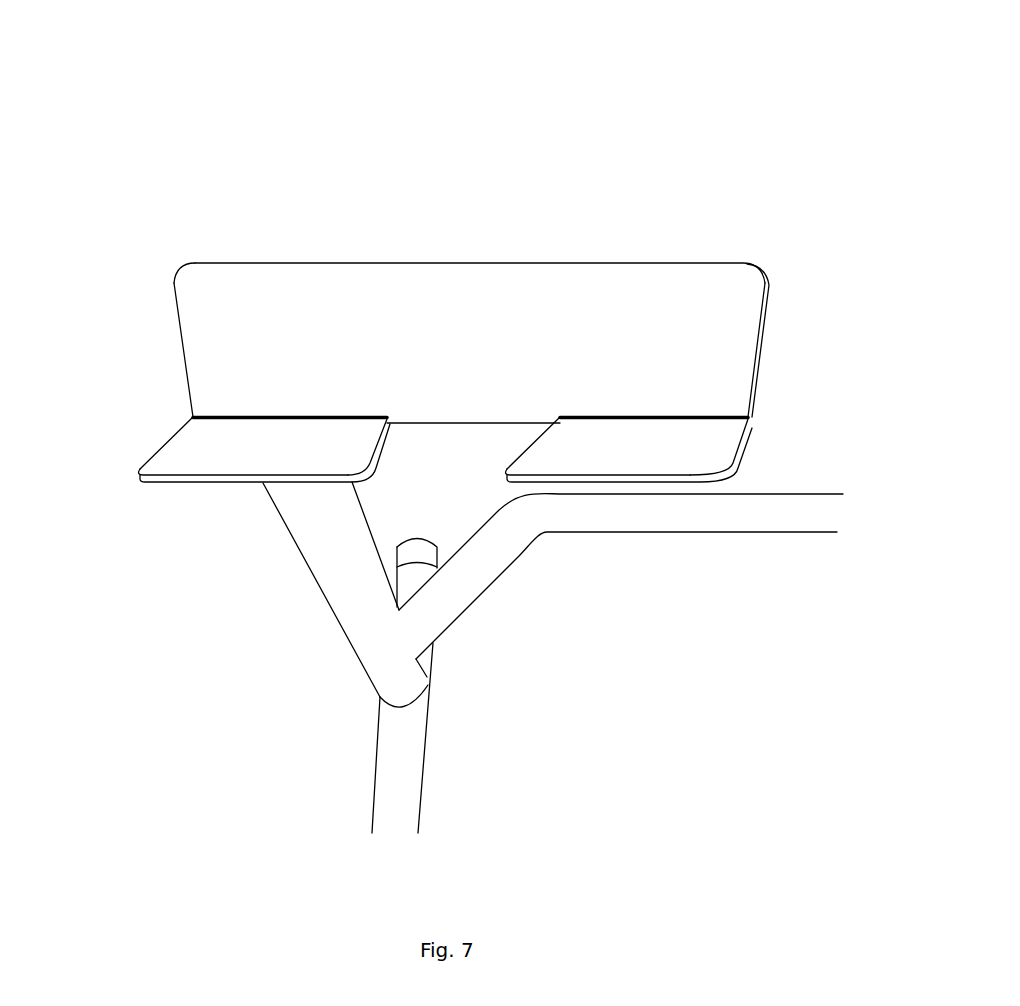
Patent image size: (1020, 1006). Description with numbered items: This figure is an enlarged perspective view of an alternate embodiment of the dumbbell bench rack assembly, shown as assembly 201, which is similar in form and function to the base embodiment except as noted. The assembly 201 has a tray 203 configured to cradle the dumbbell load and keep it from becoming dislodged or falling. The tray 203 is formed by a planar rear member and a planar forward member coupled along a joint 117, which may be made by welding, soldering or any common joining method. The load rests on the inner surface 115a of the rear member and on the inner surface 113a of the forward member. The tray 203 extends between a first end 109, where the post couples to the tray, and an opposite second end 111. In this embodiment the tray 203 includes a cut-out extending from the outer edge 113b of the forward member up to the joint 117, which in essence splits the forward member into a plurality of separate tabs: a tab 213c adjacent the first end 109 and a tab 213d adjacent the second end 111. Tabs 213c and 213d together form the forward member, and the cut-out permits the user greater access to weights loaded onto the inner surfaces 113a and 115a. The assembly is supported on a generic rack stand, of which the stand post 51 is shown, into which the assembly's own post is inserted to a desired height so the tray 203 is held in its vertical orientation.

The assembly 201 is at (411, 78).
The tray 203 is at (438, 228).
The inner surface 115a is at (247, 291).
The first end 109 is at (142, 331).
The second end 111 is at (794, 356).
The joint 117 is at (312, 415).
The inner surface 113a is at (201, 445).
The outer edge 113b is at (307, 460).
The tab 213c is at (158, 462).
The tab 213d is at (532, 462).
The stand post 51 is at (312, 575).